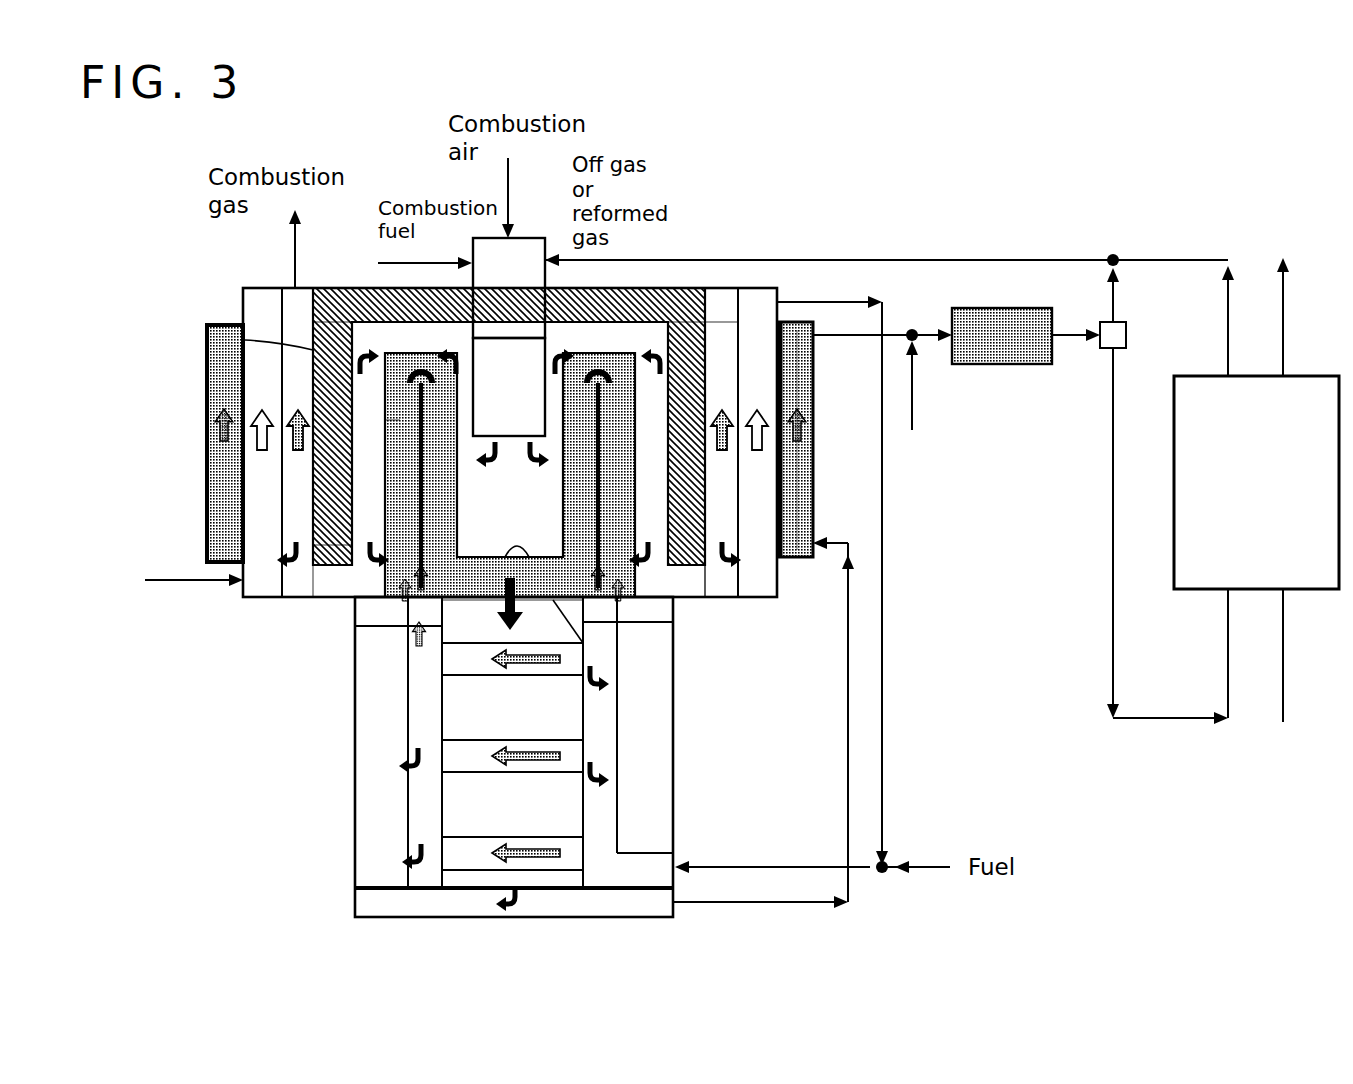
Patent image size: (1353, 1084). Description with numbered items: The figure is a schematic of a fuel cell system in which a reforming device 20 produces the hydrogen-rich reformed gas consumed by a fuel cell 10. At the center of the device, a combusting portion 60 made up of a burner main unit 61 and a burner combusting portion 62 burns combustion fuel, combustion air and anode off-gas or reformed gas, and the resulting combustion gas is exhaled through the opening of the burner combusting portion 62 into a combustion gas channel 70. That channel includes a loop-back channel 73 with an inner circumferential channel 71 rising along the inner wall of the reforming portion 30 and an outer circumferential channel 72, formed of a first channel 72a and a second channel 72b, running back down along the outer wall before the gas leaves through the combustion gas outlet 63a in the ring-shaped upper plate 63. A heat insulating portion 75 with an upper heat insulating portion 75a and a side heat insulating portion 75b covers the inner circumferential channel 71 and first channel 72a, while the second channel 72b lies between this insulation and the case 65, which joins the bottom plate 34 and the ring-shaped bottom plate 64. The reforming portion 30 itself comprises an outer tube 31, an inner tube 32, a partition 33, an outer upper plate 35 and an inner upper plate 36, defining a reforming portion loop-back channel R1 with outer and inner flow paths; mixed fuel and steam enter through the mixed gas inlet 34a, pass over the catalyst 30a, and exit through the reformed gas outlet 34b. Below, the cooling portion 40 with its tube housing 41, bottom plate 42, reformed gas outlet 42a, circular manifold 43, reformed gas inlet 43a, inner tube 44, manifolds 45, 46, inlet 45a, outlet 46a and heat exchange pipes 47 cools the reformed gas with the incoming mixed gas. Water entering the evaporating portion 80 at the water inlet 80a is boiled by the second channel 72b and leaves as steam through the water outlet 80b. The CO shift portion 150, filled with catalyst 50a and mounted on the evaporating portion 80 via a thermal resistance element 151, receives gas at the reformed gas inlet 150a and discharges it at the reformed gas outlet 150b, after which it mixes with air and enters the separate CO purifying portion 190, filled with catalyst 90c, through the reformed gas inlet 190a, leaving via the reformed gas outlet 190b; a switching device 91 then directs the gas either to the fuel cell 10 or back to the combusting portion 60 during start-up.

The fuel cell 10 is at (1174, 487).
The reforming device 20 is at (800, 624).
The reforming portion 30 is at (372, 463).
The catalyst 30a is at (315, 547).
The outer tube 31 is at (340, 527).
The inner tube 32 is at (385, 480).
The partition 33 is at (352, 505).
The bottom plate 34 is at (595, 650).
The mixed gas inlet 34a is at (362, 612).
The reformed gas outlet 34b is at (590, 665).
The outer upper plate 35 is at (372, 262).
The inner upper plate 36 is at (522, 545).
The cooling portion 40 is at (546, 780).
The tube housing 41 is at (354, 731).
The bottom plate 42 is at (427, 892).
The reformed gas outlet 42a is at (505, 892).
The circular manifold 43 is at (445, 635).
The reformed gas inlet 43a is at (360, 672).
The inner tube 44 is at (572, 725).
The manifold 45 is at (620, 725).
The inlet 45a is at (685, 858).
The manifold 46 is at (406, 733).
The outlet 46a is at (360, 643).
The heat exchange pipes 47 is at (497, 676).
The catalyst 50a is at (812, 445).
The combusting portion 60 is at (516, 300).
The burner main unit 61 is at (524, 301).
The burner combusting portion 62 is at (523, 397).
The upper plate 63 is at (560, 430).
The combustion gas outlet 63a is at (290, 287).
The bottom plate 64 is at (760, 604).
The case 65 is at (755, 363).
The combustion gas channel 70 is at (956, 181).
The inner circumferential channel 71 is at (708, 286).
The outer circumferential channel 72 is at (790, 382).
The first channel 72a is at (737, 350).
The second channel 72b is at (745, 392).
The loop-back channel 73 is at (844, 373).
The heat insulating portion 75 is at (296, 310).
The upper heat insulating portion 75a is at (350, 288).
The side heat insulating portion 75b is at (206, 338).
The evaporating portion 80 is at (782, 568).
The water inlet 80a is at (238, 586).
The water outlet 80b is at (785, 302).
The catalyst 90c is at (1006, 366).
The switching device 91 is at (1128, 333).
The CO shift portion 150 is at (870, 411).
The reformed gas inlet 150a is at (820, 538).
The reformed gas outlet 150b is at (813, 338).
The thermal resistance element 151 is at (797, 480).
The CO purifying portion 190 is at (1078, 301).
The reformed gas inlet 190a is at (950, 325).
The reformed gas outlet 190b is at (1058, 338).
The reforming portion loop-back channel R1 is at (388, 420).